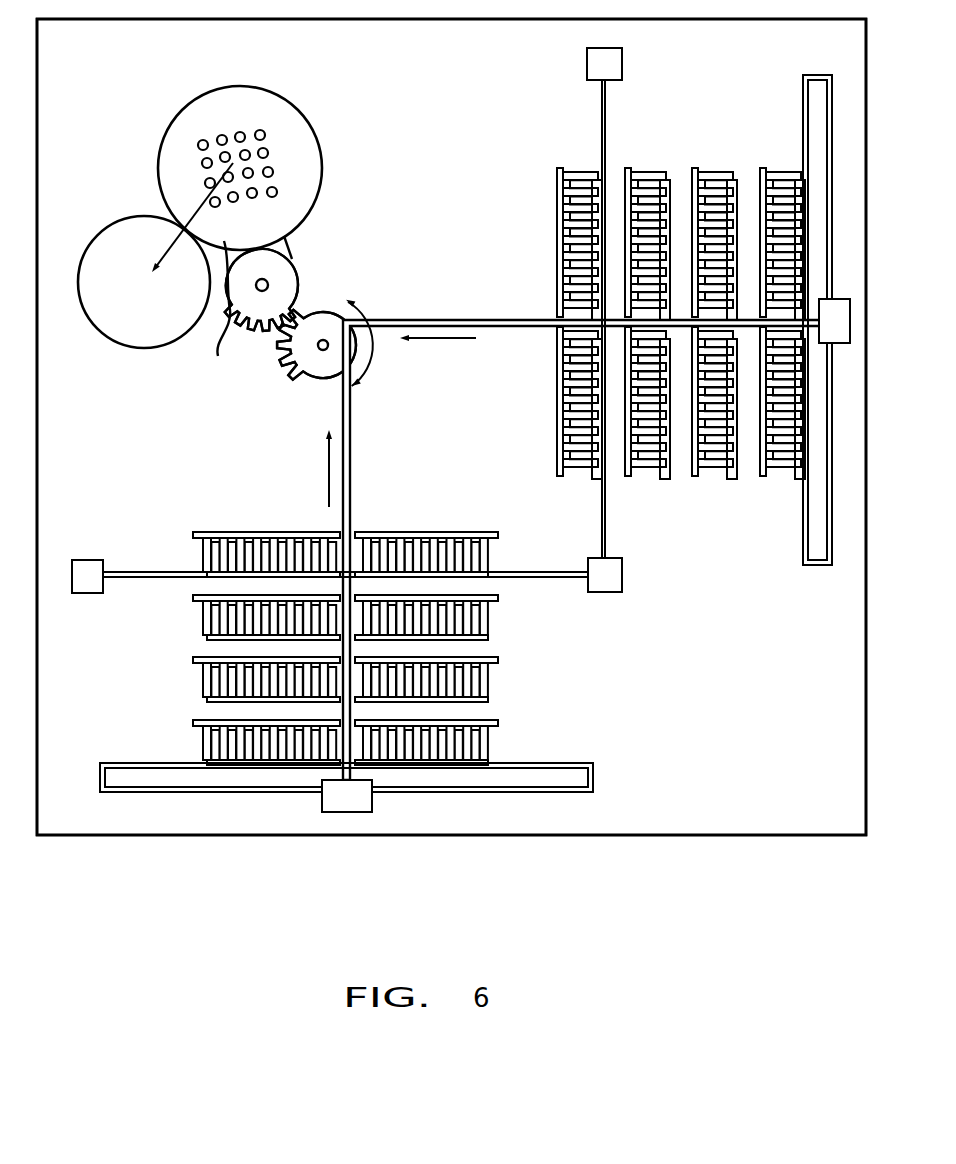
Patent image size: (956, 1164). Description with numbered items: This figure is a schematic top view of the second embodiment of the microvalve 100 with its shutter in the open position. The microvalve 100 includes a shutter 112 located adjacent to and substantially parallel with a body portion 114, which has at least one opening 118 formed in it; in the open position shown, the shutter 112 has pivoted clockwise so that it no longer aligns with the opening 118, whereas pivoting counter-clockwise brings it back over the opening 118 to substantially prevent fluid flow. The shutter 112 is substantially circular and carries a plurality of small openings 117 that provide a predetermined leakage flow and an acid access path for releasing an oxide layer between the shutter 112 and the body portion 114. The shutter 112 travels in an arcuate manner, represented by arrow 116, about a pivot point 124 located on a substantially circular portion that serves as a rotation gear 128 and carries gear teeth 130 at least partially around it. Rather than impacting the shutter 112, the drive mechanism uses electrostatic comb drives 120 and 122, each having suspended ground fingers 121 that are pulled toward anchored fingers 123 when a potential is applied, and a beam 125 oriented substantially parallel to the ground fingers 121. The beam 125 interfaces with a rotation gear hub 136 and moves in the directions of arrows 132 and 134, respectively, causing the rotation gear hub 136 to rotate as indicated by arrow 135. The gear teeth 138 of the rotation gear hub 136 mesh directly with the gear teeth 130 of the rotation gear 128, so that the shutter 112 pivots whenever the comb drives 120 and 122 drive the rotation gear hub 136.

The microvalve 100 is at (418, 98).
The shutter 112 is at (173, 96).
The body portion 114 is at (110, 480).
The arrow 116 is at (203, 180).
The small openings 117 is at (236, 200).
The opening 118 is at (122, 236).
The comb drive 120 is at (318, 660).
The suspended ground fingers 121 is at (490, 563).
The comb drive 122 is at (666, 128).
The anchored fingers 123 is at (498, 542).
The pivot point 124 is at (259, 274).
The beam 125 is at (350, 456).
The rotation gear 128 is at (298, 272).
The gear teeth 130 is at (228, 332).
The arrow 132 is at (328, 478).
The arrow 134 is at (476, 338).
The arrow 135 is at (377, 353).
The rotation gear hub 136 is at (318, 378).
The gear teeth 138 is at (278, 356).